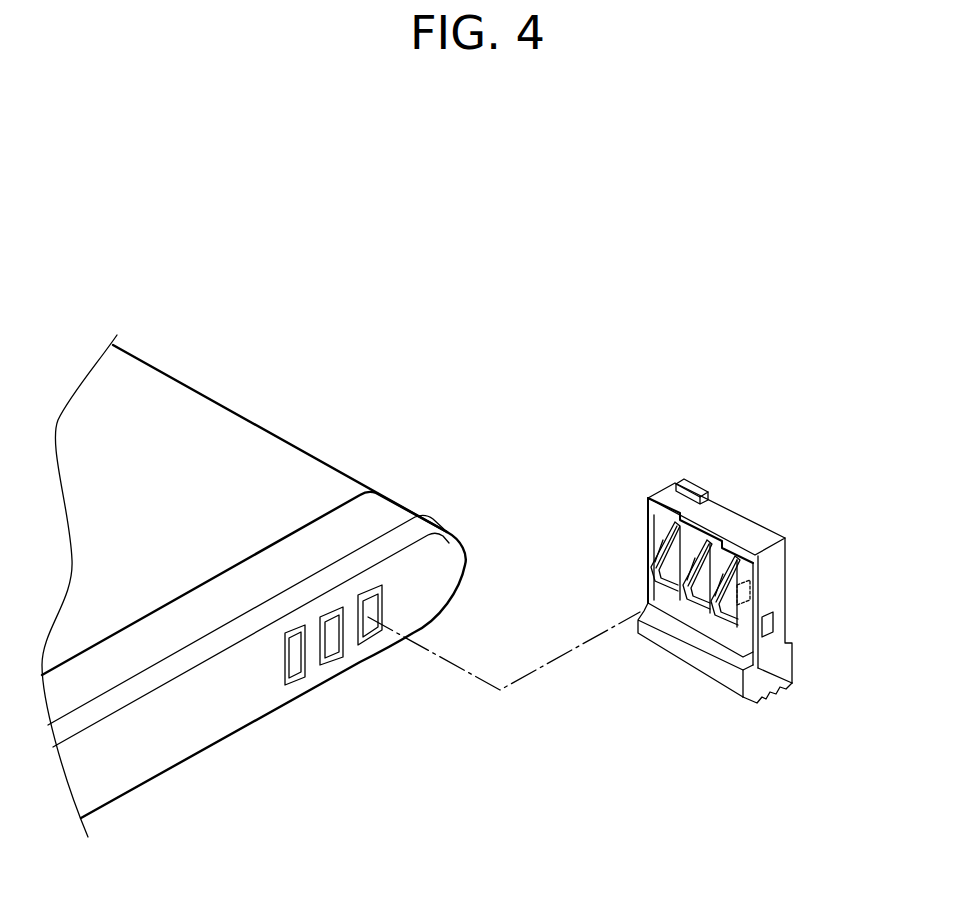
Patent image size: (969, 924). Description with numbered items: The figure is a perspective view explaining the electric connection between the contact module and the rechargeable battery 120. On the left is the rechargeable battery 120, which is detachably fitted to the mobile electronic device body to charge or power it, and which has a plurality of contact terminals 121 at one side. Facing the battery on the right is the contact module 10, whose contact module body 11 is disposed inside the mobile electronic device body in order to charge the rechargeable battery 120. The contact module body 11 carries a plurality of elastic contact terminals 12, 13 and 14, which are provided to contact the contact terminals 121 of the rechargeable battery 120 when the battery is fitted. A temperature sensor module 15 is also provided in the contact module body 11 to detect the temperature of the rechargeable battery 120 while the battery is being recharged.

The contact module 10 is at (710, 539).
The contact module body 11 is at (772, 577).
The elastic contact terminal 12 is at (727, 563).
The elastic contact terminal 13 is at (698, 547).
The elastic contact terminal 14 is at (667, 533).
The temperature sensor module 15 is at (743, 606).
The rechargeable battery 120 is at (262, 445).
The contact terminals 121 is at (293, 677).